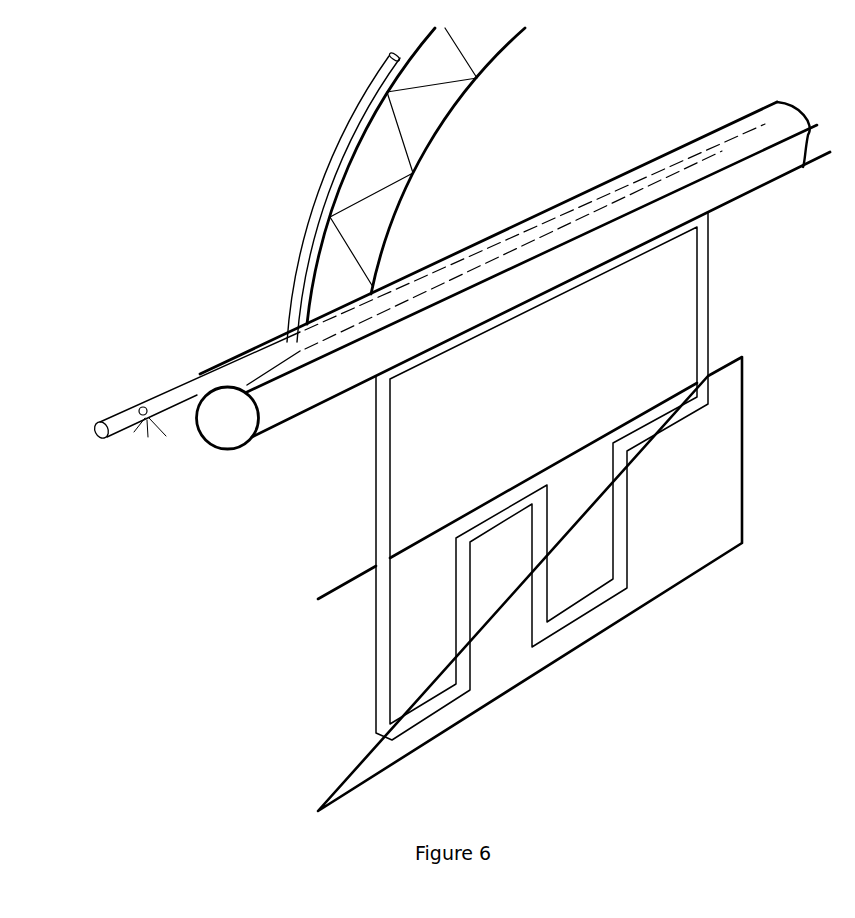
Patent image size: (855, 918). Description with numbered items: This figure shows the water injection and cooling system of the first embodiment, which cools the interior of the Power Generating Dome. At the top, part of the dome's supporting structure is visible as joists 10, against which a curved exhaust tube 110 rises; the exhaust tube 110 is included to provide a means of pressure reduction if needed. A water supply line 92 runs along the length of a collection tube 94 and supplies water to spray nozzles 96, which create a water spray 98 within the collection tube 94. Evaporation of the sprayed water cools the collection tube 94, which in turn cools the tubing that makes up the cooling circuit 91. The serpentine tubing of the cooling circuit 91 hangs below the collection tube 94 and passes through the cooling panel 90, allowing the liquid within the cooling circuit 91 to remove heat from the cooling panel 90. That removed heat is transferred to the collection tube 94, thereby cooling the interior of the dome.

The joists 10 is at (430, 164).
The exhaust tube 110 is at (314, 184).
The water supply line 92 is at (142, 391).
The collection tube 94 is at (285, 415).
The spray nozzles 96 is at (156, 433).
The water spray 98 is at (136, 444).
The cooling panel 90 is at (547, 460).
The cooling circuit 91 is at (395, 458).